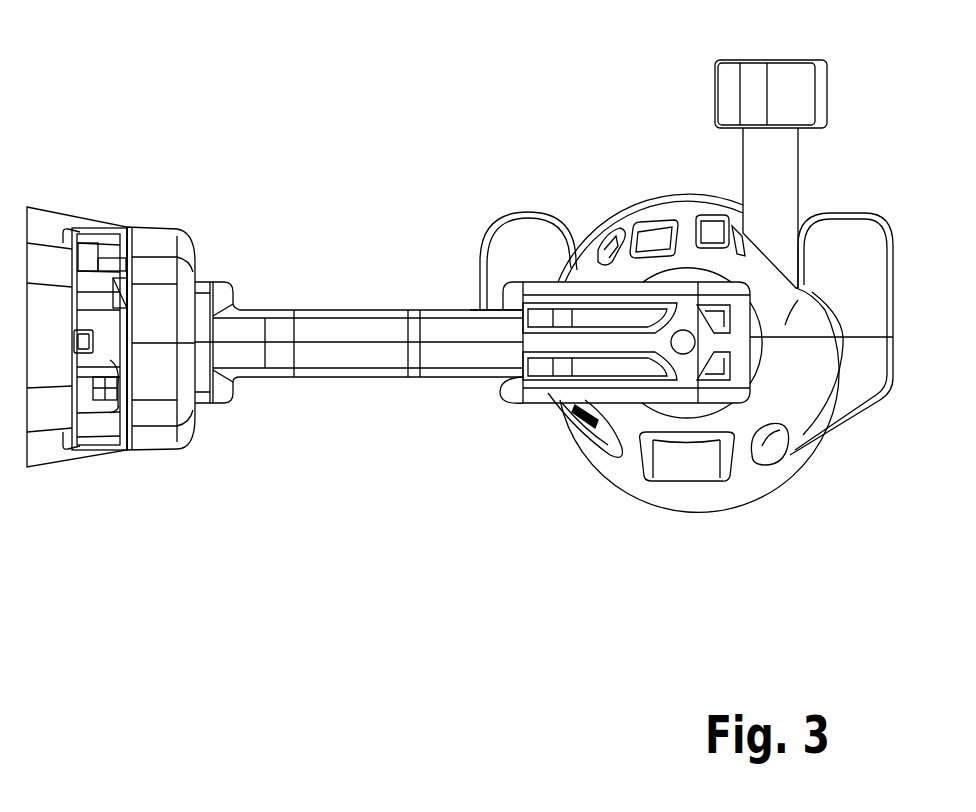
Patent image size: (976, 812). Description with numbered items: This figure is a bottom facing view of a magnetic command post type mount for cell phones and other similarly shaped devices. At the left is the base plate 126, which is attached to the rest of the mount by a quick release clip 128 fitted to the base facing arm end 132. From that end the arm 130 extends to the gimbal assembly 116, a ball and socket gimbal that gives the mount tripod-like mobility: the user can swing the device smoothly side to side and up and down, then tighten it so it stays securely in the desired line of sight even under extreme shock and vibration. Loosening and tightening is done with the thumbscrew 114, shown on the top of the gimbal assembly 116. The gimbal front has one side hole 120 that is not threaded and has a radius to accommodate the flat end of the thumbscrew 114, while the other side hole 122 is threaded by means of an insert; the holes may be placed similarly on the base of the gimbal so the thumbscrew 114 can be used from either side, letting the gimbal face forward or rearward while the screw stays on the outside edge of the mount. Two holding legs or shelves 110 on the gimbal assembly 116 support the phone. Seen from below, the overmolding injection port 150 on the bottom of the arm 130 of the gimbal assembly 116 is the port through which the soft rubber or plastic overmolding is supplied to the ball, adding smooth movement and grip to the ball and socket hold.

The holding legs/shelves 110 is at (517, 212).
The thumbscrew 114 is at (775, 78).
The gimbal assembly 116 is at (778, 545).
The side hole 120 is at (792, 288).
The threaded side hole 122 is at (614, 230).
The base plate 126 is at (78, 210).
The quick release clip 128 is at (105, 350).
The arm 130 is at (337, 353).
The base facing arm end 132 is at (156, 226).
The overmolding injection port 150 is at (683, 352).